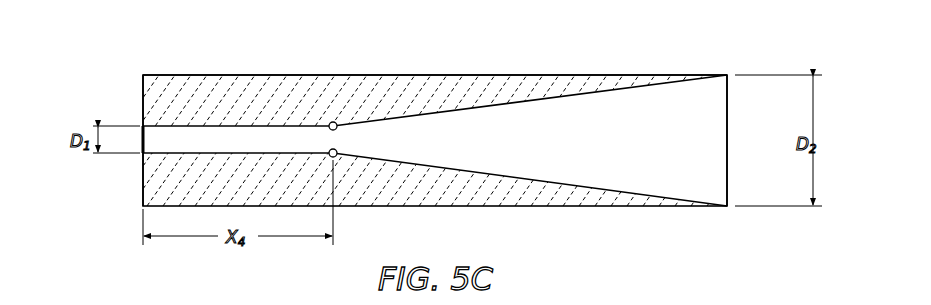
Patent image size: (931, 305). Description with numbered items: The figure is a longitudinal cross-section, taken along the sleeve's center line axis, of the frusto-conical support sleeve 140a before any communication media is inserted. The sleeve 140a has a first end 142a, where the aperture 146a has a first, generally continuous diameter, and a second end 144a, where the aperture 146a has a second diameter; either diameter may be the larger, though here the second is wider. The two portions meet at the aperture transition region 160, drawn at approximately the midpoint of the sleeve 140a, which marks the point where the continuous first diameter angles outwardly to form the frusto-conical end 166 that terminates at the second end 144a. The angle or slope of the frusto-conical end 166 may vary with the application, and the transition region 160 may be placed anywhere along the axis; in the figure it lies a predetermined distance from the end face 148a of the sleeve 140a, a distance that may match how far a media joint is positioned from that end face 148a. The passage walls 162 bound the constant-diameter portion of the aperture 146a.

The support sleeve 140a is at (455, 58).
The first end 142a is at (172, 74).
The second end 144a is at (698, 74).
The aperture 146a is at (715, 143).
The end face 148a is at (143, 97).
The aperture transition region 160 is at (335, 158).
The constant-diameter passage wall 162 is at (222, 125).
The frusto-conical end 166 is at (557, 183).